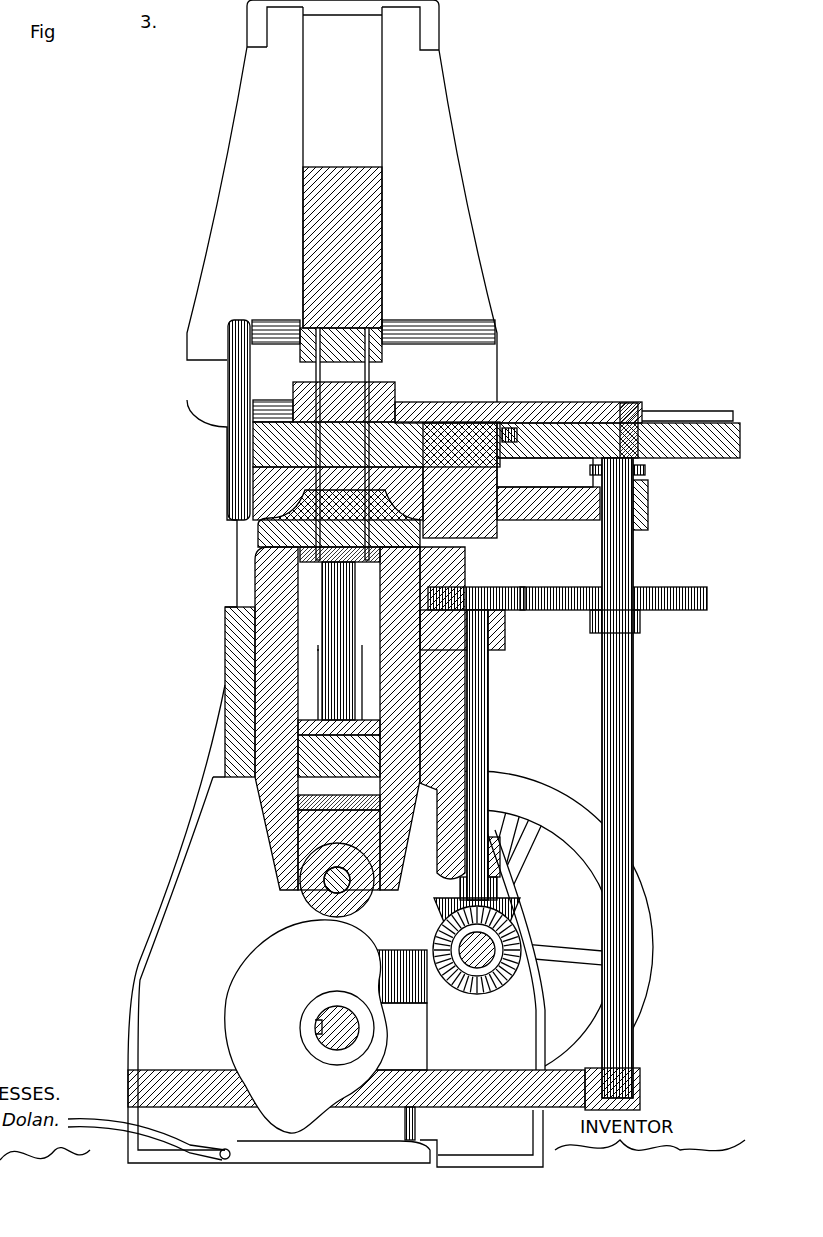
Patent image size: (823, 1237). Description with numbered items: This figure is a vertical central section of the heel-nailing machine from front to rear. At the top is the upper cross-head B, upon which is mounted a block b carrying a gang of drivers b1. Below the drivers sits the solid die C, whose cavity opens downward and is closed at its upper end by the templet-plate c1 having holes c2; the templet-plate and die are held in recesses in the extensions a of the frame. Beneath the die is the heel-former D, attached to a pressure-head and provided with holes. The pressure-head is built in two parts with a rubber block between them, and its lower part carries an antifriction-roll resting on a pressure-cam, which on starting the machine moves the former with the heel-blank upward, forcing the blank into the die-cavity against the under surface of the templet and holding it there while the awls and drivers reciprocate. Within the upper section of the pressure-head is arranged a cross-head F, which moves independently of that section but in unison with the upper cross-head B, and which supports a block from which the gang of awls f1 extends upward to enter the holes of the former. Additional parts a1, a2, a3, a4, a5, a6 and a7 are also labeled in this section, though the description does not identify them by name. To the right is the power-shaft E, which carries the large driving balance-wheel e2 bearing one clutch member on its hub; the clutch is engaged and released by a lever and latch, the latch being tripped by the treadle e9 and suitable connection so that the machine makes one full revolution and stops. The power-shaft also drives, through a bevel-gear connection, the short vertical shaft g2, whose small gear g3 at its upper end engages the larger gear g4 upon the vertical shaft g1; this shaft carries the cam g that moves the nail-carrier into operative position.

The upper cross-head B is at (351, 247).
The block b is at (410, 353).
The gang of drivers b1 is at (317, 377).
The templet-plate c1 is at (253, 440).
The holes c2 is at (372, 458).
The solid die C is at (277, 490).
The heel-former D is at (273, 524).
The packing plate a1 is at (382, 540).
The extensions of the frame a is at (258, 578).
The outer casing wall a2 is at (262, 735).
The gang of awls f1 is at (318, 648).
The cross-head F is at (368, 760).
The packing ring a4 is at (300, 798).
The bearing block a5 is at (312, 832).
The roller a3 is at (307, 898).
The cam a6 is at (278, 1002).
The cam hub a7 is at (322, 1047).
The cam g is at (688, 458).
The vertical shaft g1 is at (633, 720).
The short vertical shaft g2 is at (488, 712).
The small gear g3 is at (490, 587).
The larger gear g4 is at (660, 587).
The large driving balance-wheel e2 is at (477, 947).
The power-shaft E is at (473, 968).
The treadle e9 is at (170, 1138).